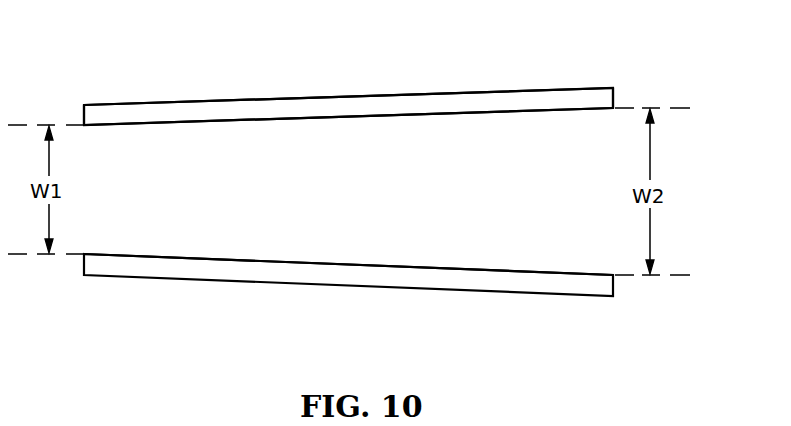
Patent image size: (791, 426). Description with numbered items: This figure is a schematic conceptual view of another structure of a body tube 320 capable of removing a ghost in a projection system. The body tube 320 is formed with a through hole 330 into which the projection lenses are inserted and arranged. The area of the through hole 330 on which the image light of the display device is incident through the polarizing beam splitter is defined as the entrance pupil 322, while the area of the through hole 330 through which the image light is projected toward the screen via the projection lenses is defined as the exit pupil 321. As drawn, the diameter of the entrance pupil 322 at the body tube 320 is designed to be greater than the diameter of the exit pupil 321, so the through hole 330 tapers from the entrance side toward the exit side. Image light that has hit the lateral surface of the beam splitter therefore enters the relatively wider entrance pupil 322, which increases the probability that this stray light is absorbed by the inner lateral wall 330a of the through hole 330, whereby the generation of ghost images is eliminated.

The body tube 320 is at (482, 103).
The exit pupil 321 is at (130, 143).
The entrance pupil 322 is at (603, 165).
The through hole 330 is at (402, 155).
The inner lateral wall 330a is at (258, 118).